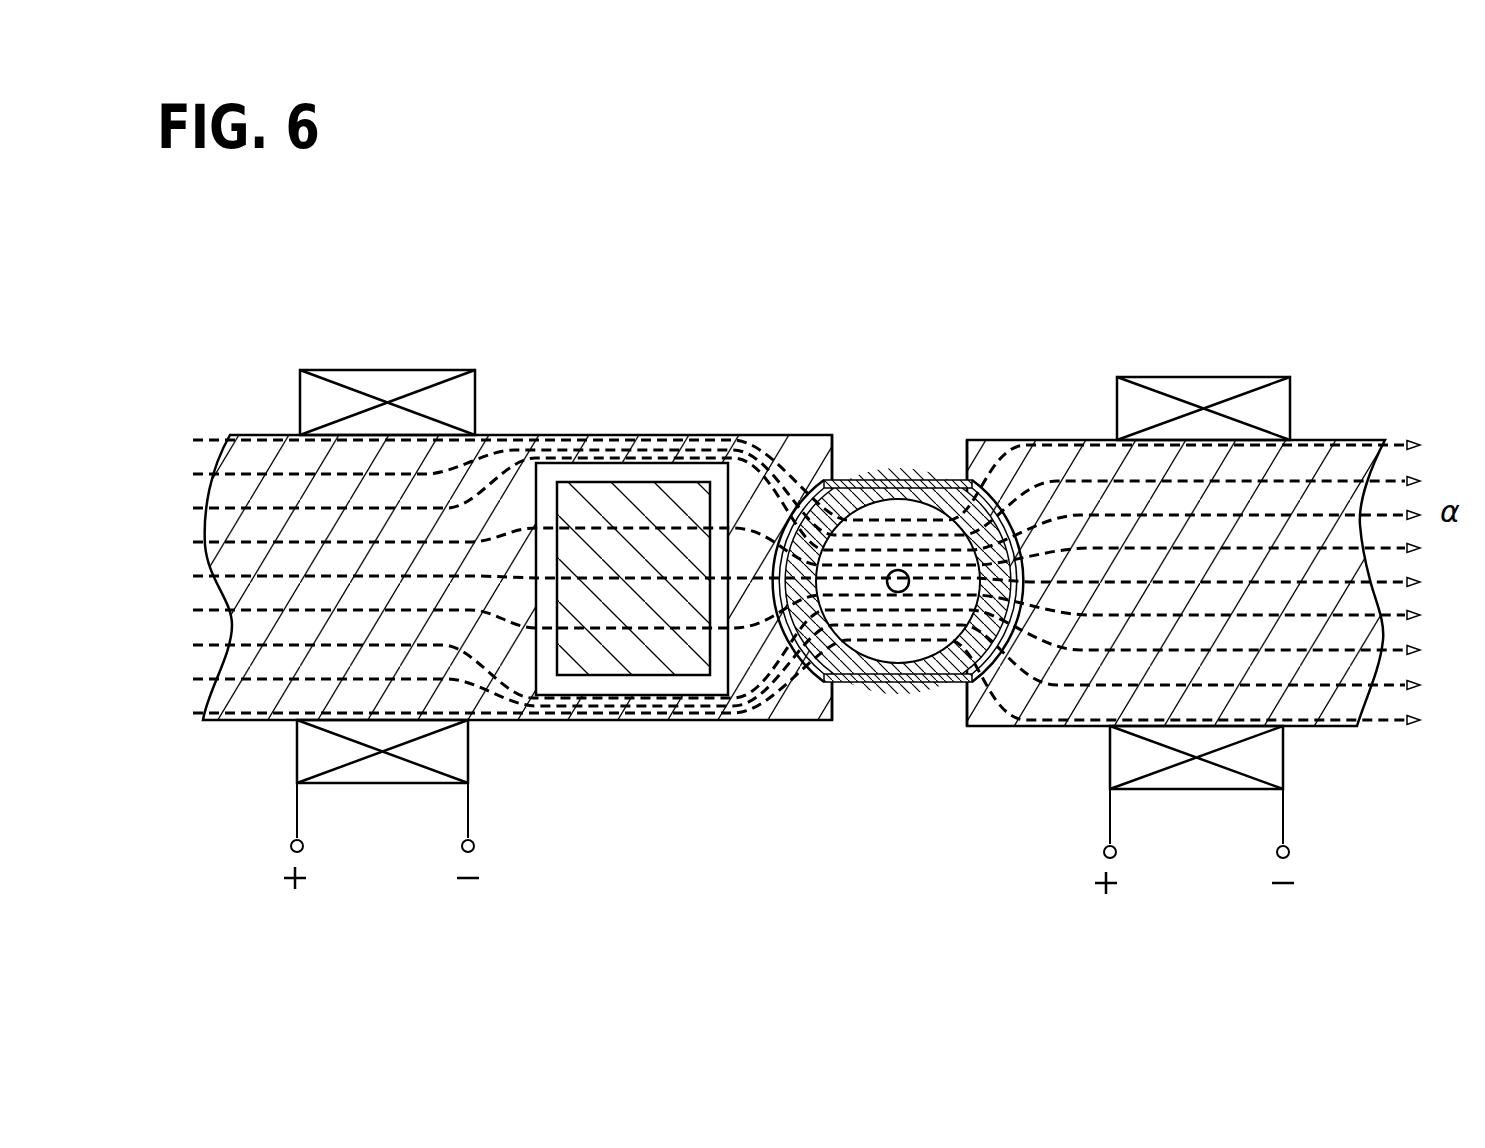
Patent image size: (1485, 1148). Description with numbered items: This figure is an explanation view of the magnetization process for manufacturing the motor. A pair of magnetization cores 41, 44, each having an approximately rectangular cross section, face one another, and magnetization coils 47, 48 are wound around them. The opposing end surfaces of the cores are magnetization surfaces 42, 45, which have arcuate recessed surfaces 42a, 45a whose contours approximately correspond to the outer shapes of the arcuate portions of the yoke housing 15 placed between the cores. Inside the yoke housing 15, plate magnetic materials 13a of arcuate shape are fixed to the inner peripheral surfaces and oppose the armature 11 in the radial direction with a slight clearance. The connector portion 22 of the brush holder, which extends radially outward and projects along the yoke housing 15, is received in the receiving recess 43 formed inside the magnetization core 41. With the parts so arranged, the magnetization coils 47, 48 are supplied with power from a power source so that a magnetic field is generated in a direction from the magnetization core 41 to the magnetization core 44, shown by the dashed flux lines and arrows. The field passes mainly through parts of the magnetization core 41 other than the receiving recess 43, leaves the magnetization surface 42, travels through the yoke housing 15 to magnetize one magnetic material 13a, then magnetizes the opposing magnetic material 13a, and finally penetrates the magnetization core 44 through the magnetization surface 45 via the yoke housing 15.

The armature 11 is at (907, 500).
The magnetic material 13a is at (927, 673).
The yoke housing 15 is at (870, 480).
The connector portion 22 is at (592, 666).
The magnetization core 41 is at (265, 433).
The magnetization surface 42 is at (838, 455).
The arcuate recessed surface 42a is at (843, 690).
The receiving recess 43 is at (656, 682).
The magnetization core 44 is at (1335, 440).
The magnetization surface 45 is at (962, 457).
The arcuate recessed surface 45a is at (945, 685).
The magnetization coil 47 is at (355, 370).
The magnetization coil 48 is at (1160, 378).